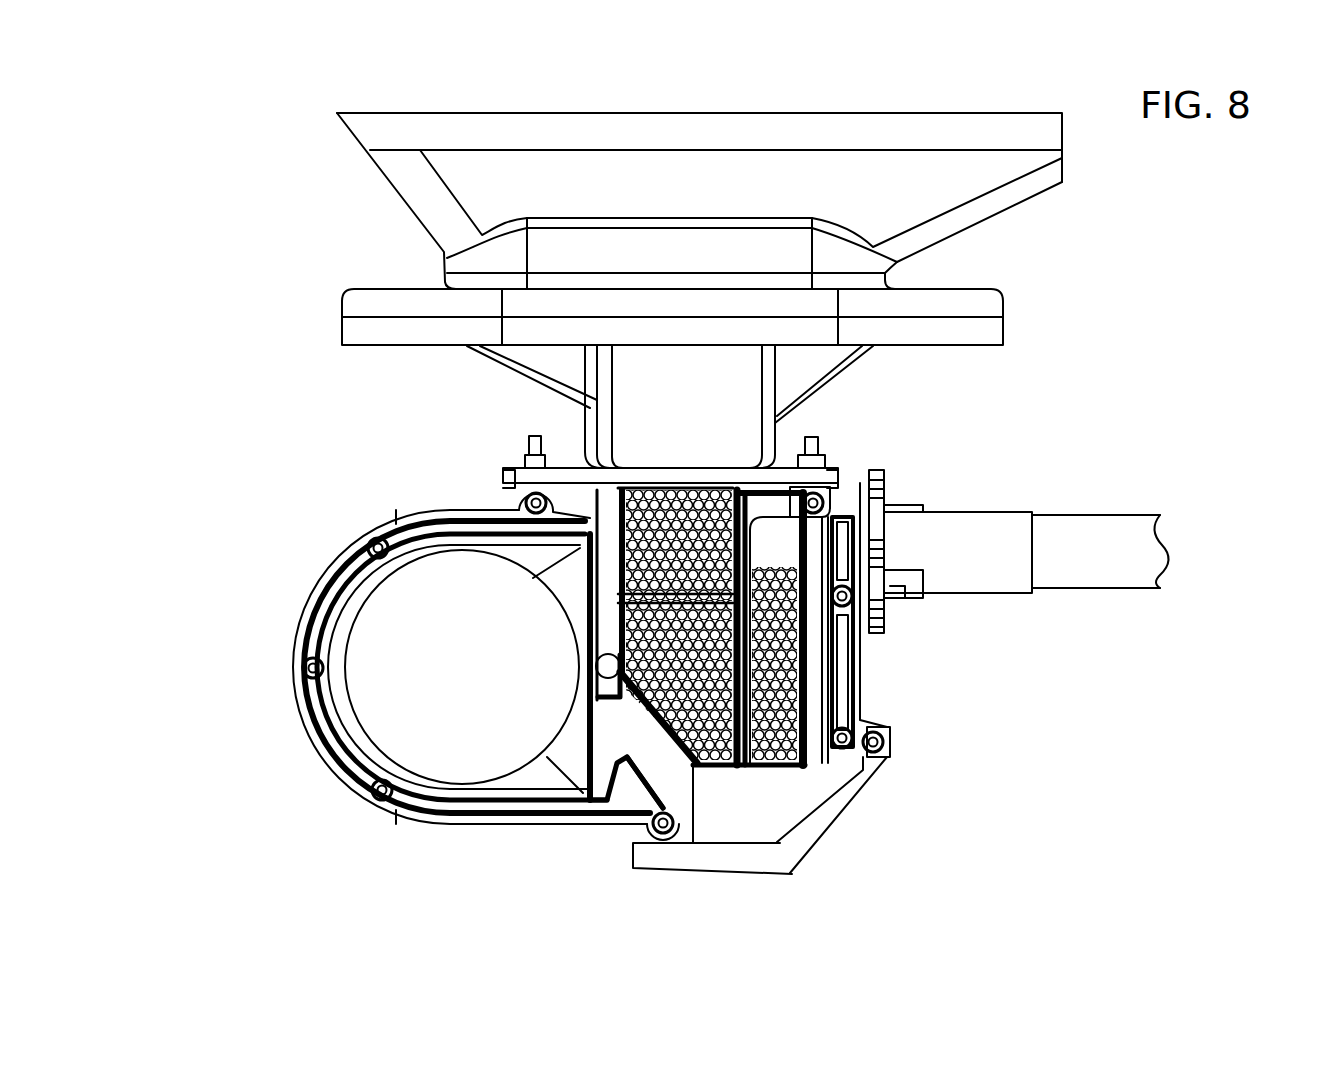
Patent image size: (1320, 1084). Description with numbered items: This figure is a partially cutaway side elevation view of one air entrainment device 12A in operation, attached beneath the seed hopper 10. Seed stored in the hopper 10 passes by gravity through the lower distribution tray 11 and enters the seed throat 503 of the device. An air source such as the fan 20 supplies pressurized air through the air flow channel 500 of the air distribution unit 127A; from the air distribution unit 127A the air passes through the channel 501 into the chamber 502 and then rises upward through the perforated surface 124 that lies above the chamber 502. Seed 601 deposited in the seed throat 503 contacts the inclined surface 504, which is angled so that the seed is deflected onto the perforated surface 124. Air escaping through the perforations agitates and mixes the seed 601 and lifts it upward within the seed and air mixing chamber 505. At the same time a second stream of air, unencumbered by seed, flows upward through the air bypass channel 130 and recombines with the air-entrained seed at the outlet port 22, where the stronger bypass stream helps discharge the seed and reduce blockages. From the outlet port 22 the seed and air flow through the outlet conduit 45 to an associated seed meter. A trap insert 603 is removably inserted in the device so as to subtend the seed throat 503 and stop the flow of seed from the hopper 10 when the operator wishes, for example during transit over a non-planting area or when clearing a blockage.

The seed hopper 10 is at (1007, 208).
The distribution tray 11 is at (778, 423).
The air entrainment device 12A is at (288, 533).
The fan 20 is at (417, 570).
The outlet port 22 is at (862, 508).
The outlet conduit 45 is at (1050, 512).
The perforated surface 124 is at (780, 770).
The air distribution unit 127A is at (300, 712).
The air bypass channel 130 is at (813, 673).
The air flow channel 500 is at (470, 679).
The channel 501 is at (627, 765).
The chamber 502 is at (747, 813).
The seed throat 503 is at (560, 483).
The inclined surface 504 is at (627, 713).
The seed and air mixing chamber 505 is at (795, 632).
The seed 601 is at (620, 487).
The trap insert 603 is at (695, 487).